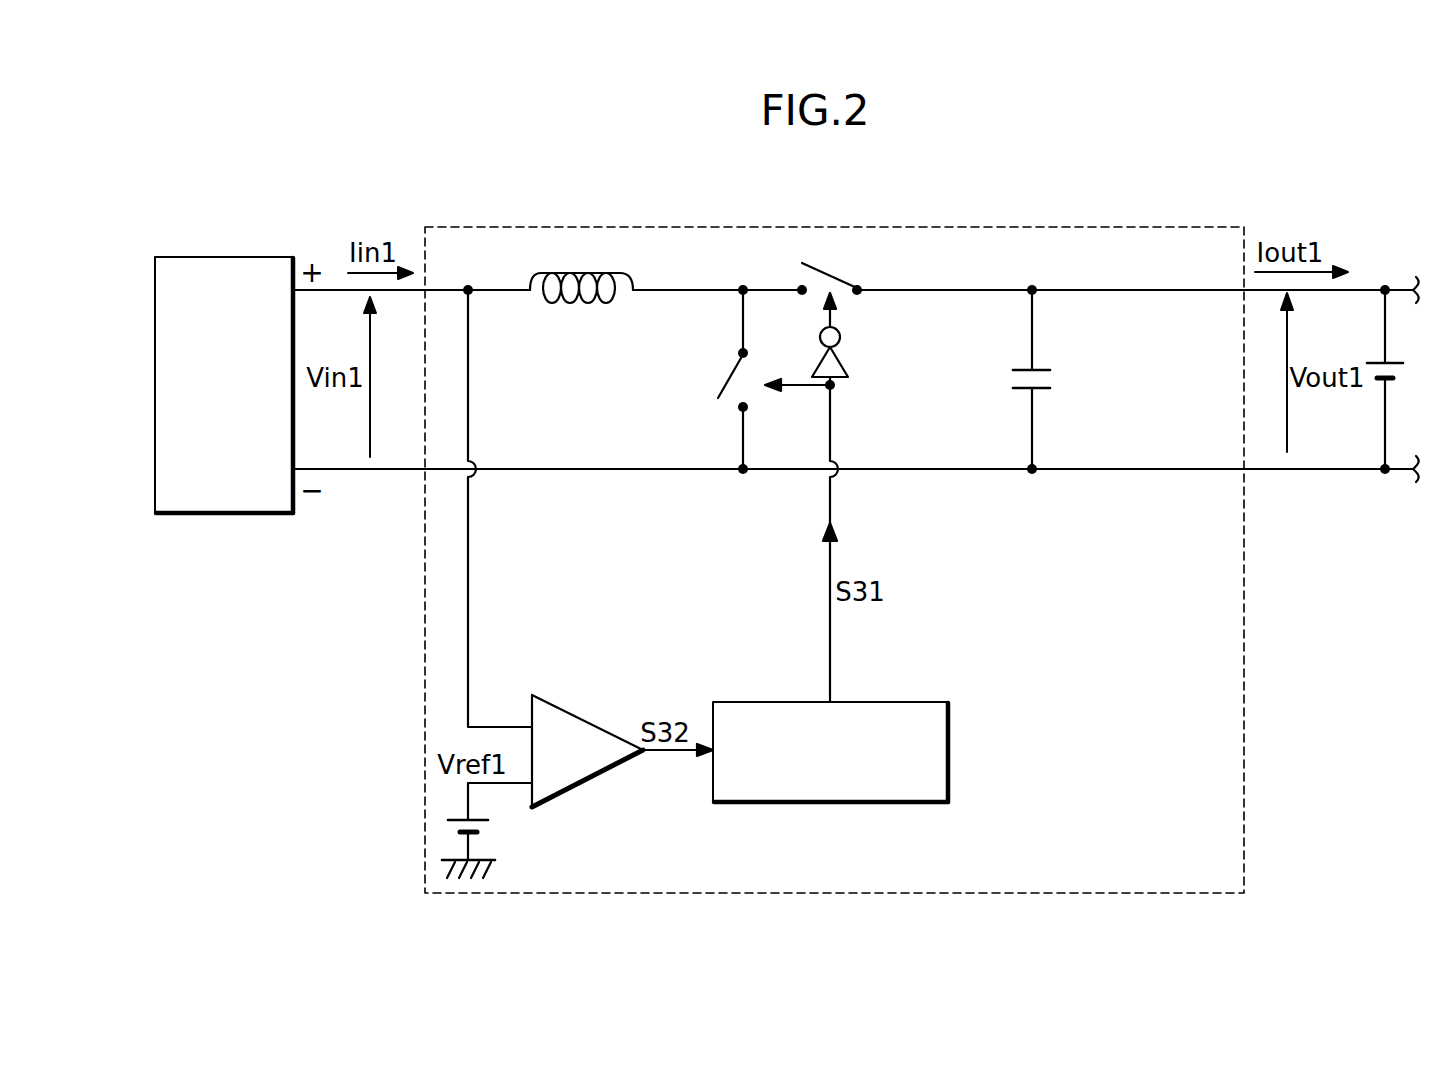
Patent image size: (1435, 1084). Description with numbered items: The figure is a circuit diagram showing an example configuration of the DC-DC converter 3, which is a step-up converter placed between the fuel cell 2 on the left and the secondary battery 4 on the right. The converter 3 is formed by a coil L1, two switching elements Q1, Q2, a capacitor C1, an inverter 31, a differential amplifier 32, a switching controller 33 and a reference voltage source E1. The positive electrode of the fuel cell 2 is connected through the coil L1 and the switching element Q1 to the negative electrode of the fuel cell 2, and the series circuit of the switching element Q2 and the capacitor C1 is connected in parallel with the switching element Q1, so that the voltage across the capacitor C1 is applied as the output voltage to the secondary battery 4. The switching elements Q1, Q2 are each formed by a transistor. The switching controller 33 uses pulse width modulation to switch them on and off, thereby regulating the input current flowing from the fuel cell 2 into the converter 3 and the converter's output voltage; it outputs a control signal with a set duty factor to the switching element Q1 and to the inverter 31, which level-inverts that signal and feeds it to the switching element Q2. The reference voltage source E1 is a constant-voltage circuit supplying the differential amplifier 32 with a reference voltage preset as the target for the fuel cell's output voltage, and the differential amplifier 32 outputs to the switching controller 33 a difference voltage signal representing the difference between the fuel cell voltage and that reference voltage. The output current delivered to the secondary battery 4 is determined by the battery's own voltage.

The fuel cell 2 is at (155, 283).
The DC-DC converter 3 is at (1202, 226).
The secondary battery 4 is at (1393, 362).
The inverter 31 is at (847, 358).
The differential amplifier 32 is at (572, 712).
The switching controller 33 is at (948, 748).
The coil L1 is at (581, 268).
The capacitor C1 is at (1053, 379).
The switching element Q1 is at (705, 379).
The switching element Q2 is at (829, 265).
The reference voltage source E1 is at (484, 830).